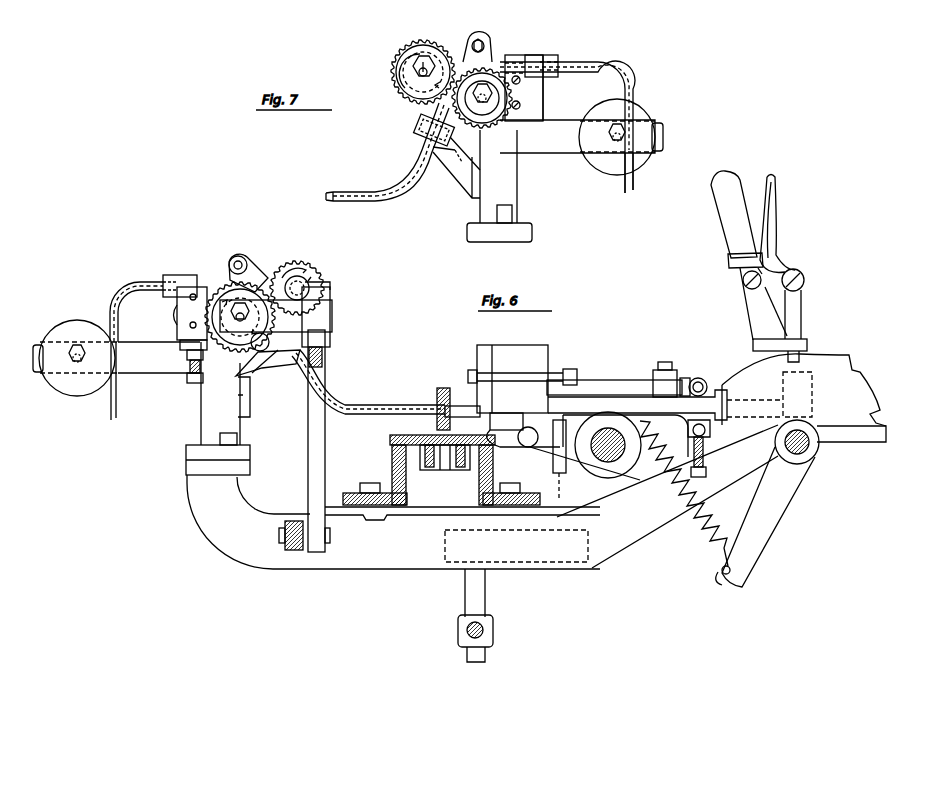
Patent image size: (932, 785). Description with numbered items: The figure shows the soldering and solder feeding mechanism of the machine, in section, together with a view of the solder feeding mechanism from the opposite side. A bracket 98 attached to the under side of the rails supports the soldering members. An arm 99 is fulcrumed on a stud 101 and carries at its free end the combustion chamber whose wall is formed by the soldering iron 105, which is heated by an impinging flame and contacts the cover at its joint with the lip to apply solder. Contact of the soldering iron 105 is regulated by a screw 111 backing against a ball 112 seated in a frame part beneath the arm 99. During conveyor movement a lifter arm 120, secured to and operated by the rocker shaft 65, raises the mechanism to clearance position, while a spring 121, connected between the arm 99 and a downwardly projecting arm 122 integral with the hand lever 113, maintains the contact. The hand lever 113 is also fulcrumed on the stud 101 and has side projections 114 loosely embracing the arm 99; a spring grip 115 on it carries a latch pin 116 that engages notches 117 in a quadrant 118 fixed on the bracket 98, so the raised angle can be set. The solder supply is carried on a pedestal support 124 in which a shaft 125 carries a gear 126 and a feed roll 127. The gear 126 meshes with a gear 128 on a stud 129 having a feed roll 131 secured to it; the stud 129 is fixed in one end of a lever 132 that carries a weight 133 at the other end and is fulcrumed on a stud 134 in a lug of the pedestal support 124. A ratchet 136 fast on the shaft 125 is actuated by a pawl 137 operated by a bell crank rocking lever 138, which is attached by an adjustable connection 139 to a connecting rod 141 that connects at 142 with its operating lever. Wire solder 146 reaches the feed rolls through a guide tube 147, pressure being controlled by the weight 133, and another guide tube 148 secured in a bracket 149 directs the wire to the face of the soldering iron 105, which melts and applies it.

In FIG. 6, the rocker shaft 65 is at (604, 462).
In FIG. 6, the bracket 98 is at (205, 514).
In FIG. 6, the arm 99 is at (650, 400).
In FIG. 6, the stud 101 is at (810, 449).
In FIG. 6, the soldering iron 105 is at (480, 392).
In FIG. 6, the screw 111 is at (704, 470).
In FIG. 6, the ball 112 is at (712, 445).
In FIG. 6, the hand lever 113 is at (735, 232).
In FIG. 6, the side projections 114 is at (708, 382).
In FIG. 6, the spring grip 115 is at (776, 231).
In FIG. 6, the latch pin 116 is at (798, 318).
In FIG. 6, the notches 117 is at (802, 360).
In FIG. 6, the quadrant 118 is at (857, 394).
In FIG. 6, the lifter arm 120 is at (530, 448).
In FIG. 6, the spring 121 is at (700, 540).
In FIG. 6, the downwardly projecting arm 122 is at (760, 536).
In FIG. 6, the pedestal support 124 is at (205, 411).
In FIG. 7, the shaft 125 is at (538, 92).
In FIG. 6, the shaft 125 is at (318, 312).
In FIG. 7, the gear 126 is at (502, 63).
In FIG. 7, the feed roll 127 is at (497, 120).
In FIG. 7, the gear 128 is at (430, 44).
In FIG. 7, the stud 129 is at (410, 94).
In FIG. 7, the feed roll 131 is at (405, 62).
In FIG. 7, the lever 132 is at (548, 150).
In FIG. 6, the lever 132 is at (125, 373).
In FIG. 7, the weight 133 is at (642, 113).
In FIG. 6, the weight 133 is at (77, 358).
In FIG. 7, the stud 134 is at (420, 132).
In FIG. 6, the stud 134 is at (322, 355).
In FIG. 6, the ratchet 136 is at (246, 345).
In FIG. 6, the pawl 137 is at (252, 272).
In FIG. 6, the bell crank rocking lever 138 is at (225, 278).
In FIG. 6, the adjustable connection 139 is at (331, 337).
In FIG. 6, the connecting rod 141 is at (312, 452).
In FIG. 6, the connection 142 is at (332, 542).
In FIG. 7, the wire solder 146 is at (634, 183).
In FIG. 6, the wire solder 146 is at (110, 402).
In FIG. 7, the guide tube 147 is at (628, 72).
In FIG. 6, the guide tube 147 is at (112, 303).
In FIG. 7, the guide tube 148 is at (380, 202).
In FIG. 6, the guide tube 148 is at (378, 408).
In FIG. 6, the bracket 149 is at (262, 378).